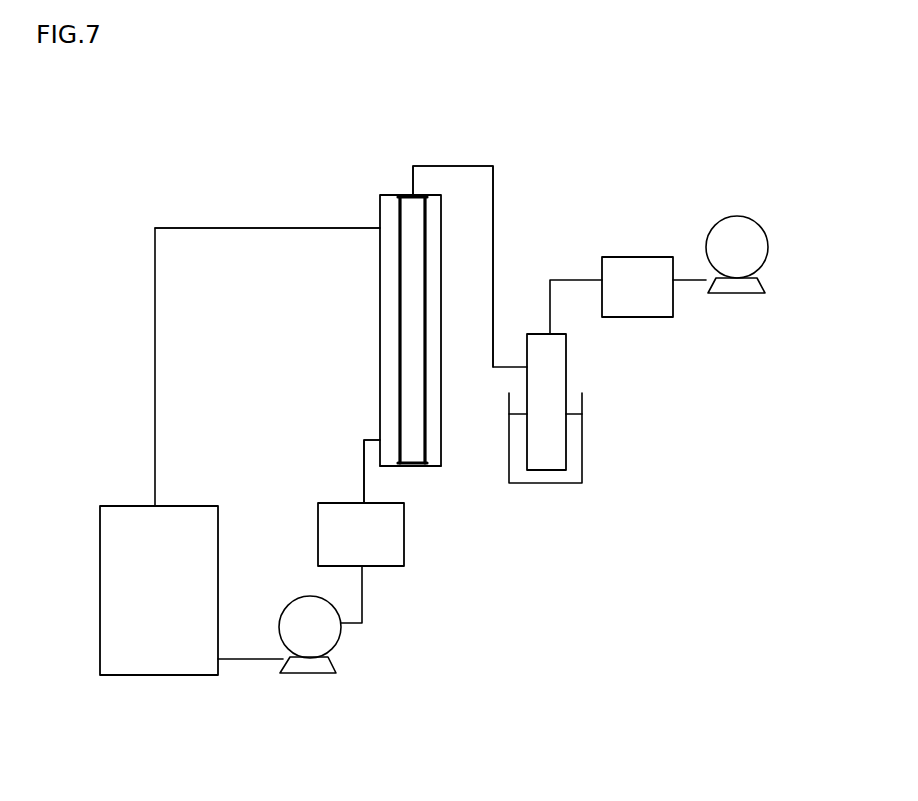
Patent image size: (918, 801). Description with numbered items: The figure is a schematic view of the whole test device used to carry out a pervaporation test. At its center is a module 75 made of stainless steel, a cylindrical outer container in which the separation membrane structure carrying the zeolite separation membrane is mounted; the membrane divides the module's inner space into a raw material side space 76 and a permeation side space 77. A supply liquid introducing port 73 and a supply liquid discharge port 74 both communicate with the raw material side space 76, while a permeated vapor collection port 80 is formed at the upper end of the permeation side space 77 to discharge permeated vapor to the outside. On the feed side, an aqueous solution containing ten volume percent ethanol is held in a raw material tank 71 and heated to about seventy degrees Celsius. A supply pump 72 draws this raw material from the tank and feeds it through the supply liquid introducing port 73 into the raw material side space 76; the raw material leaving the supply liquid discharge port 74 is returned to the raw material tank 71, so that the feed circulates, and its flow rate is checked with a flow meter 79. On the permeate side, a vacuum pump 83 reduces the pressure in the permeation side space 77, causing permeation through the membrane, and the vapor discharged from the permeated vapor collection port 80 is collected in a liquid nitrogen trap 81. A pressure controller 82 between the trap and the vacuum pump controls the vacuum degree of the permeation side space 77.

The raw material tank 71 is at (200, 546).
The supply pump 72 is at (322, 638).
The supply liquid introducing port 73 is at (376, 440).
The supply liquid discharge port 74 is at (380, 228).
The module made of SUS 75 is at (441, 464).
The raw material side space 76 is at (385, 283).
The permeation side space 77 is at (408, 250).
The flow meter 79 is at (393, 552).
The permeated vapor collection port 80 is at (412, 193).
The liquid N2 trap 81 is at (567, 445).
The pressure controller 82 is at (642, 310).
The vacuum pump 83 is at (753, 232).